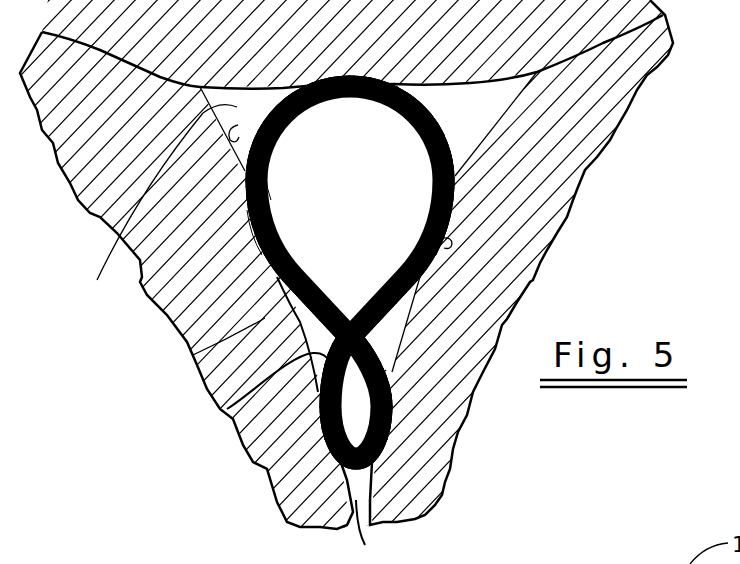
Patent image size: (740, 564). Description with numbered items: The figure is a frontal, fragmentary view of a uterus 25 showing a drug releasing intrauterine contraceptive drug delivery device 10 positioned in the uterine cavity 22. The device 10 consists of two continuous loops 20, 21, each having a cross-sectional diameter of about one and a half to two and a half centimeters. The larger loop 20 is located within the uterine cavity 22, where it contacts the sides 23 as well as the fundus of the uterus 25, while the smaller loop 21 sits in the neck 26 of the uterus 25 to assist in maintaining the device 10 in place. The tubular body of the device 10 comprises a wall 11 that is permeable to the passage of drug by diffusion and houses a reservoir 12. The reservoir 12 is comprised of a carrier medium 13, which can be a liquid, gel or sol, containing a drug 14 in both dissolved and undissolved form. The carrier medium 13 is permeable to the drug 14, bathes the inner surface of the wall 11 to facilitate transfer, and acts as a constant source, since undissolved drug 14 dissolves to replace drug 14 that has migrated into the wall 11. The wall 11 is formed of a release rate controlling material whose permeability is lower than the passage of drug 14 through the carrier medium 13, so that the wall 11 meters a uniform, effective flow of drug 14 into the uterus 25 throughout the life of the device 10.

The drug delivery device 10 is at (452, 114).
The wall 11 is at (447, 240).
The reservoir 12 is at (430, 130).
The carrier medium 13 is at (267, 177).
The drug 14 is at (275, 252).
The loop 20 is at (193, 355).
The loop 21 is at (227, 409).
The uterine cavity 22 is at (98, 215).
The sides 23 is at (156, 206).
The uterus 25 is at (513, 203).
The neck 26 is at (363, 541).